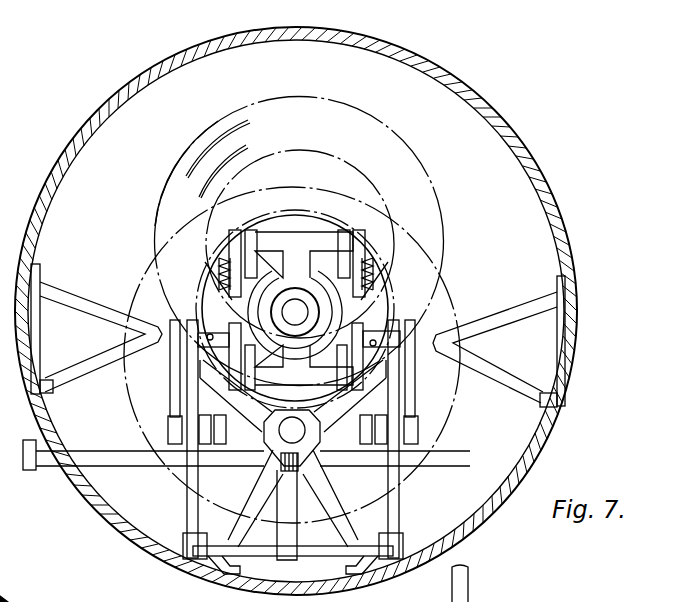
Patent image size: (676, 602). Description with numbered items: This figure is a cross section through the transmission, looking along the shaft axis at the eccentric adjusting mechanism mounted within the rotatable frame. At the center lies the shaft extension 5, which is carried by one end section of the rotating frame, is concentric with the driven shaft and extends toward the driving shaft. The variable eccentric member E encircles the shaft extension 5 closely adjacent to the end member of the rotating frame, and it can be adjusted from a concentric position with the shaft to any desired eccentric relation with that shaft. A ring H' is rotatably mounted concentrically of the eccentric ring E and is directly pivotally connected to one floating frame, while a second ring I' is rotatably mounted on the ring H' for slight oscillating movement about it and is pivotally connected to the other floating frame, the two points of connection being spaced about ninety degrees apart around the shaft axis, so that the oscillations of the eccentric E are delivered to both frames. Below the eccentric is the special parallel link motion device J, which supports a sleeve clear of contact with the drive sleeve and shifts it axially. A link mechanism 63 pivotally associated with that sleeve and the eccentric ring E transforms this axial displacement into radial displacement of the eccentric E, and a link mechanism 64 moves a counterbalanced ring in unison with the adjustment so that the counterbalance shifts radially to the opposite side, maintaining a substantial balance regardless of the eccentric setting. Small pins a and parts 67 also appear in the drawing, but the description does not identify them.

The shaft extension 5 is at (295, 315).
The nut 67 is at (222, 285).
The link mechanism 63 is at (247, 260).
The link mechanism 64 is at (246, 352).
The second ring I' is at (299, 241).
The ring H' is at (199, 159).
The variable eccentric member E is at (228, 178).
The parallel link motion device J is at (293, 467).
The pin a is at (291, 340).